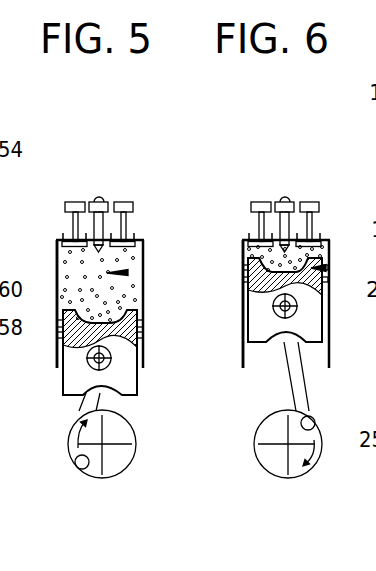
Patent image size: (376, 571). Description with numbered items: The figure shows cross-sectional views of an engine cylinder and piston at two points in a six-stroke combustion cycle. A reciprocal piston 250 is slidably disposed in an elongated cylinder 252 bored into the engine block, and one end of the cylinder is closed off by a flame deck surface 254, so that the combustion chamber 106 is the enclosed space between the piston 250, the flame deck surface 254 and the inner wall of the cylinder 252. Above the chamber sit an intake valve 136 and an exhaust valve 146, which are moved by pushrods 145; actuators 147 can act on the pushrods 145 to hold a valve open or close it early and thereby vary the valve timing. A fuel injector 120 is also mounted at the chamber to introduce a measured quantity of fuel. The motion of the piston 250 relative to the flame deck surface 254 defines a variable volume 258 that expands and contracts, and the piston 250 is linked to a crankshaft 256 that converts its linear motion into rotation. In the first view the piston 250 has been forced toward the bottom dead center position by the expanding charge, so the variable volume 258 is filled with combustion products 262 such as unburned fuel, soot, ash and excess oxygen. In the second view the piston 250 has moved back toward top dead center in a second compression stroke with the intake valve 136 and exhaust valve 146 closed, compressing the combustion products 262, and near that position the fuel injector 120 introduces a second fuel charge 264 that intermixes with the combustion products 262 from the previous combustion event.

In FIG. 5, the combustion chamber 106 is at (70, 161).
In FIG. 6, the combustion chamber 106 is at (256, 161).
In FIG. 5, the fuel injector 120 is at (96, 201).
In FIG. 6, the fuel injector 120 is at (282, 201).
In FIG. 5, the intake valve 136 is at (64, 235).
In FIG. 6, the intake valve 136 is at (250, 235).
In FIG. 5, the pushrod 145 is at (128, 222).
In FIG. 6, the pushrod 145 is at (314, 222).
In FIG. 5, the exhaust valve 146 is at (110, 201).
In FIG. 6, the exhaust valve 146 is at (296, 201).
In FIG. 5, the actuator 147 is at (122, 201).
In FIG. 6, the actuator 147 is at (308, 201).
In FIG. 5, the reciprocal piston 250 is at (73, 378).
In FIG. 6, the reciprocal piston 250 is at (258, 333).
In FIG. 5, the cylinder 252 is at (55, 298).
In FIG. 6, the cylinder 252 is at (241, 297).
In FIG. 5, the flame deck surface 254 is at (140, 235).
In FIG. 6, the flame deck surface 254 is at (326, 235).
In FIG. 5, the crankshaft 256 is at (112, 460).
In FIG. 6, the crankshaft 256 is at (274, 460).
In FIG. 5, the variable volume 258 is at (128, 272).
In FIG. 6, the variable volume 258 is at (359, 252).
In FIG. 5, the combustion products 262 is at (133, 286).
In FIG. 6, the combustion products 262 is at (289, 269).
In FIG. 6, the second fuel charge 264 is at (262, 262).